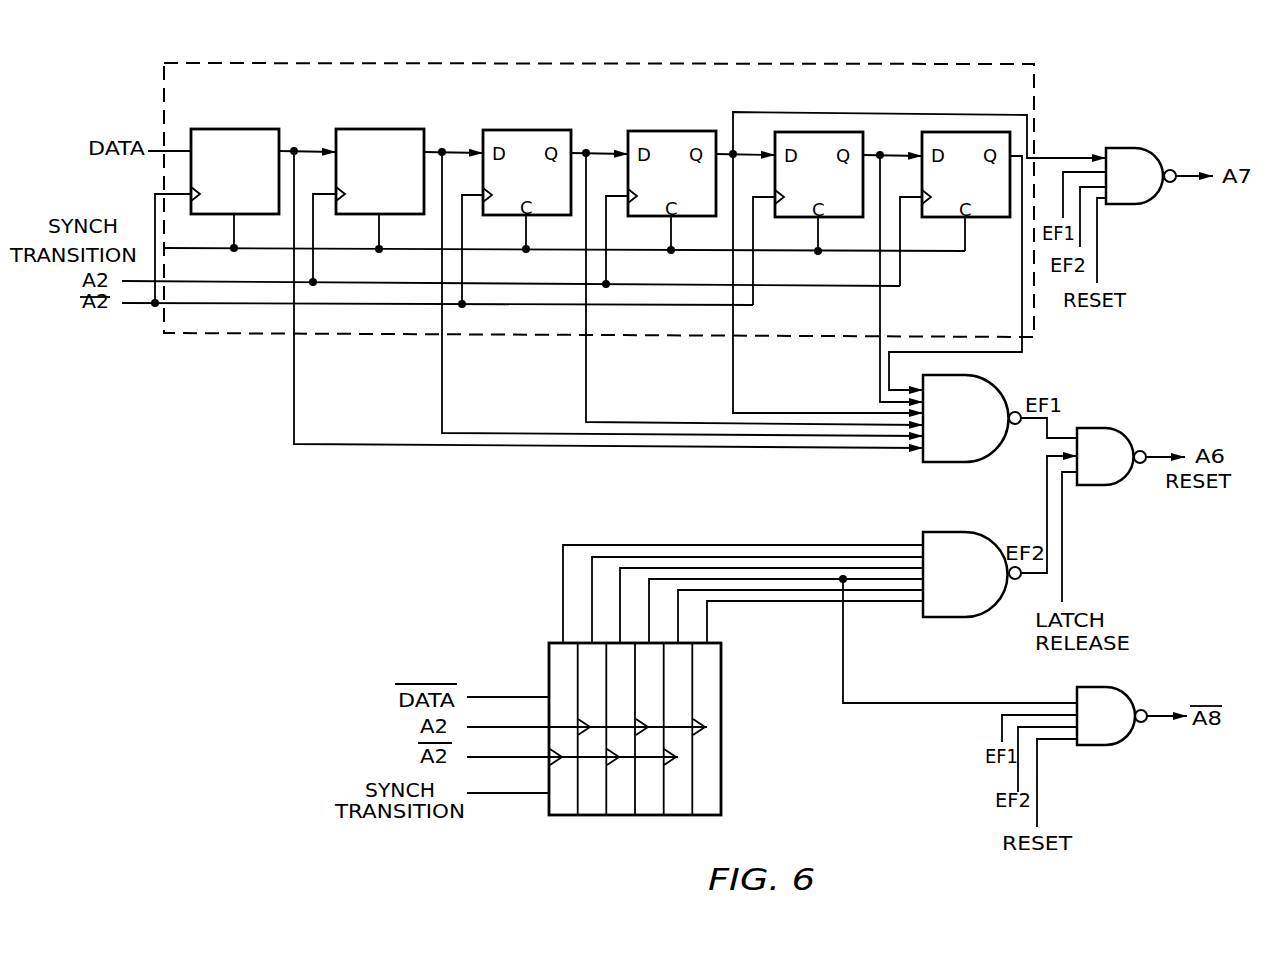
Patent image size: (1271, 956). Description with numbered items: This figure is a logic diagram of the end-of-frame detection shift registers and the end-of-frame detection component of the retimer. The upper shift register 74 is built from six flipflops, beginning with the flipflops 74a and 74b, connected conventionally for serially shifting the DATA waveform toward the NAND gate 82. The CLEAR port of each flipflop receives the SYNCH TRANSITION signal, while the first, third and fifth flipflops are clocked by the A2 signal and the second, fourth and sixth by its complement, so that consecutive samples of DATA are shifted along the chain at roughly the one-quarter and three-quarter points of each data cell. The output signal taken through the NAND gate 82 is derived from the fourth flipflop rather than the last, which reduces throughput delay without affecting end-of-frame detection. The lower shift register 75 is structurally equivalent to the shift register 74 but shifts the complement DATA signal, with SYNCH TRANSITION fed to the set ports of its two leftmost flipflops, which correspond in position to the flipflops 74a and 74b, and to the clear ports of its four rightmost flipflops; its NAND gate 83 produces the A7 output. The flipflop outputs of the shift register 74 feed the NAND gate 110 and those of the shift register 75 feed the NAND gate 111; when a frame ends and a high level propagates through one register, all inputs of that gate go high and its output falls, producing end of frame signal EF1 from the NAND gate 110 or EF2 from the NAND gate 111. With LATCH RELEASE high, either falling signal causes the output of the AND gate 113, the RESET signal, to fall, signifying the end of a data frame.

The shift register 74 is at (488, 63).
The flipflop 74a is at (229, 129).
The flipflop 74b is at (376, 129).
The NAND gate 82 is at (1131, 148).
The NAND gate 110 is at (964, 462).
The NAND gate 111 is at (964, 617).
The AND gate 113 is at (1104, 428).
The NAND gate 83 is at (1105, 745).
The shift register 75 is at (646, 815).